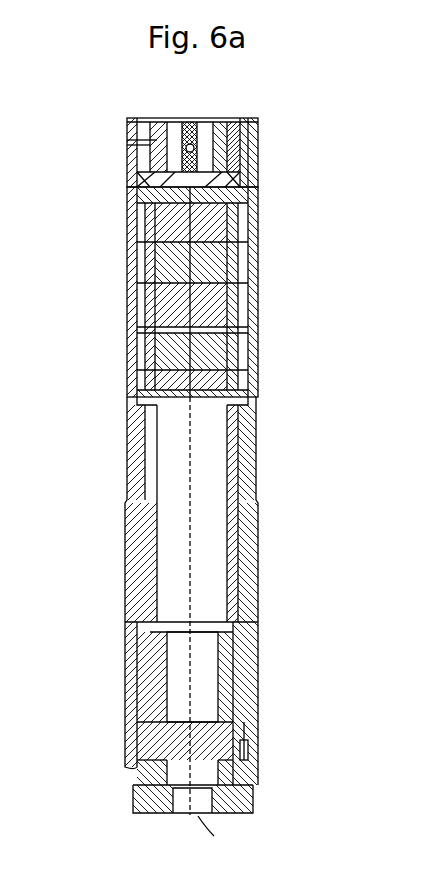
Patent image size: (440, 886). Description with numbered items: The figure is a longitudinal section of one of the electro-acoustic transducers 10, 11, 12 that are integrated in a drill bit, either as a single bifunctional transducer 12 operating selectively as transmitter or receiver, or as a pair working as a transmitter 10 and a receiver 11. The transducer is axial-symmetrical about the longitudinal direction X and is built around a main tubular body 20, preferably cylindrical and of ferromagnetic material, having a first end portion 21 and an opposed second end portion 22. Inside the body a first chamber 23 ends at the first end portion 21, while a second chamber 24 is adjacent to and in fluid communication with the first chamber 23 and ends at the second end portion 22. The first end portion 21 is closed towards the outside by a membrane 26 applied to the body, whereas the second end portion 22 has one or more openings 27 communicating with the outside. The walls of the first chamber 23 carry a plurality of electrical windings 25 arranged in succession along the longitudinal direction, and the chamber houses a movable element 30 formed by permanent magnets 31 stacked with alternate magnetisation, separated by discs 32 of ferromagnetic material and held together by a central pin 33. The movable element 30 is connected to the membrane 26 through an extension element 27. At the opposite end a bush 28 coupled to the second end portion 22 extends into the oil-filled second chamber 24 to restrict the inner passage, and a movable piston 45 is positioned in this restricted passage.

The electro-acoustic transducer 10 is at (220, 468).
The electro-acoustic transducer 11 is at (220, 468).
The electro-acoustic transducer 12 is at (318, 106).
The main tubular body 20 is at (131, 141).
The first end portion 21 is at (262, 153).
The second end portion 22 is at (258, 752).
The first chamber 23 is at (262, 300).
The second chamber 24 is at (233, 563).
The electrical windings 25 is at (127, 248).
The membrane 26 is at (236, 119).
The openings / extension element 27 is at (250, 131).
The bush 28 is at (142, 778).
The movable element 30 is at (240, 213).
The permanent magnets 31 is at (127, 222).
The discs 32 is at (262, 262).
The pin 33 is at (262, 360).
The movable piston 45 is at (258, 720).